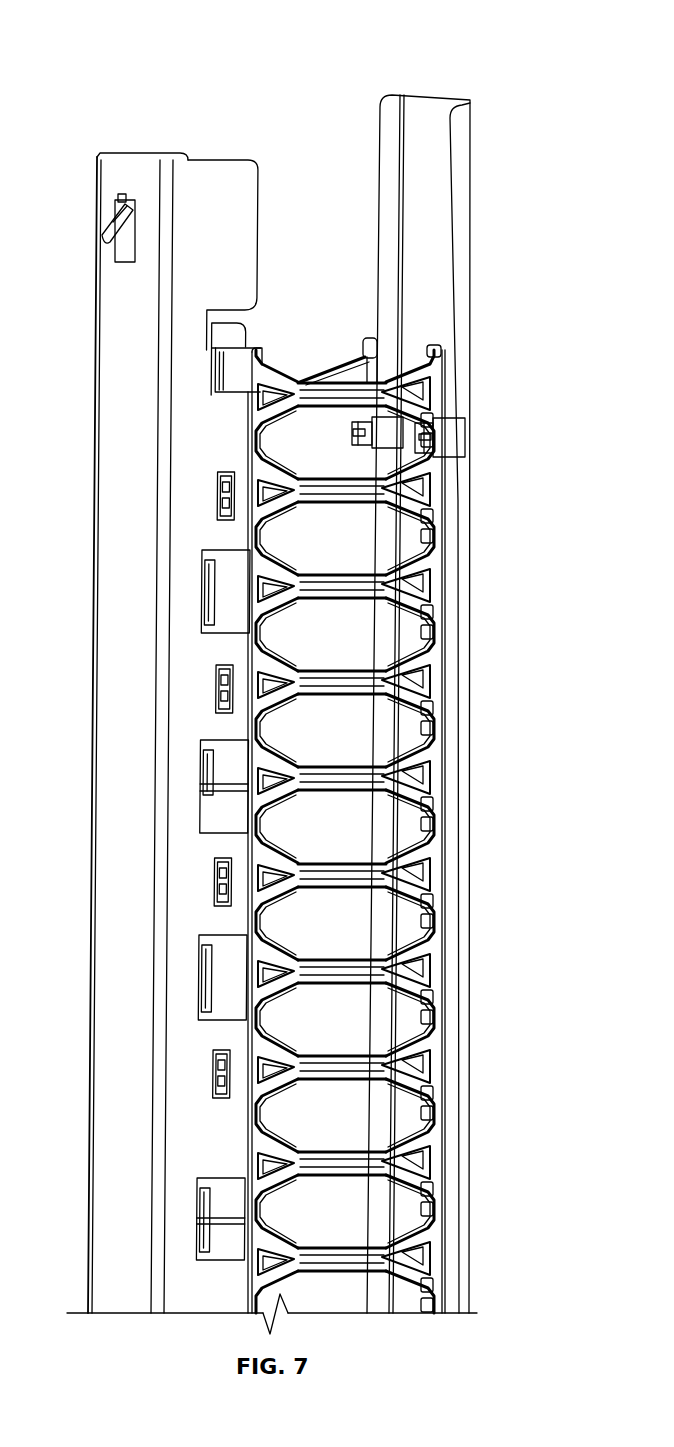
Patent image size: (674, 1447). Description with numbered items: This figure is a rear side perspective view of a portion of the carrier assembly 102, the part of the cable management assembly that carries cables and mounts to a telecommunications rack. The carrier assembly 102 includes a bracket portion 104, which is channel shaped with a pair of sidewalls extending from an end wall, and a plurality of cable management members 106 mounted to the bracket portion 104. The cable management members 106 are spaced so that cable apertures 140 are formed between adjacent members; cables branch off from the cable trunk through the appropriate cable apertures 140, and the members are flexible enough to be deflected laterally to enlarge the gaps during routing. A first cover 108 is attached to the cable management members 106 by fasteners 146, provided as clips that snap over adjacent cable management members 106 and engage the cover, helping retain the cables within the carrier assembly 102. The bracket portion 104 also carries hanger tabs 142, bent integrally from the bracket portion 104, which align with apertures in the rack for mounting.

The carrier assembly 102 is at (400, 52).
The bracket portion 104 is at (105, 336).
The cable management members 106 is at (273, 467).
The first cover 108 is at (458, 290).
The cable apertures 140 is at (308, 738).
The hanger tabs 142 is at (100, 240).
The fasteners 146 is at (455, 431).